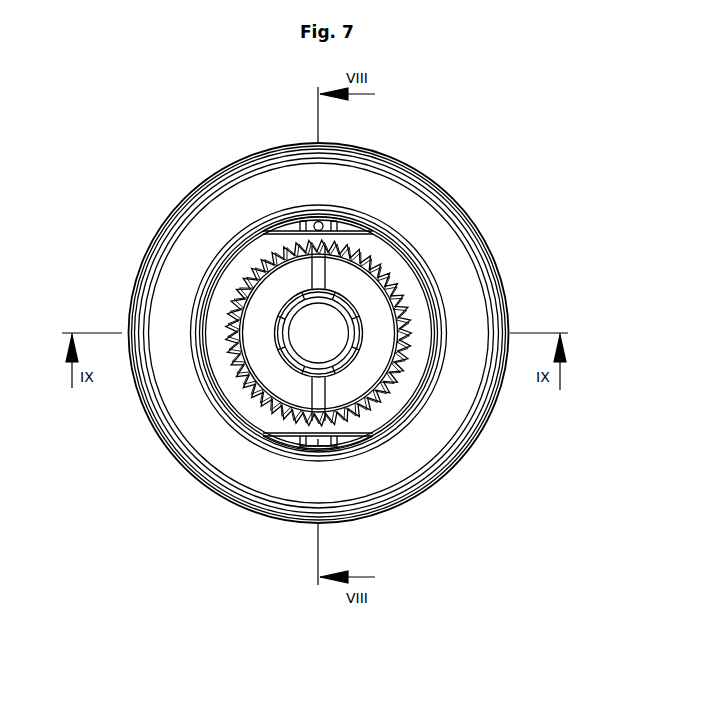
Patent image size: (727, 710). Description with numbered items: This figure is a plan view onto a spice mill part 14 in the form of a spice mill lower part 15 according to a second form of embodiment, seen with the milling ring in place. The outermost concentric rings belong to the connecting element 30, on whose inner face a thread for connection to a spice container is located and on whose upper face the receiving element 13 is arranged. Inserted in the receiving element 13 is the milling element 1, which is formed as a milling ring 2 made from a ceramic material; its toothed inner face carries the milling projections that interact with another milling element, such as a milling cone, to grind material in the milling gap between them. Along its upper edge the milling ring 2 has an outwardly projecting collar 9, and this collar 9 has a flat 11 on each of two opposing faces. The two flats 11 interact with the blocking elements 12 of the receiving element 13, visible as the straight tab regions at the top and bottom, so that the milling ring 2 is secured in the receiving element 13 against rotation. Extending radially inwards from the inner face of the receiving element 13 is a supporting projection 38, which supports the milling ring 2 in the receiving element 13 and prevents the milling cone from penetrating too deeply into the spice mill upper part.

The milling element 1 is at (225, 380).
The milling ring 2 is at (240, 398).
The collar 9 is at (420, 310).
The flat 11 is at (350, 226).
The blocking element 12 is at (300, 227).
The receiving element 13 is at (423, 407).
The spice mill part 14 is at (462, 180).
The spice mill lower part 15 is at (445, 258).
The connecting element 30 is at (497, 402).
The supporting projection 38 is at (312, 273).